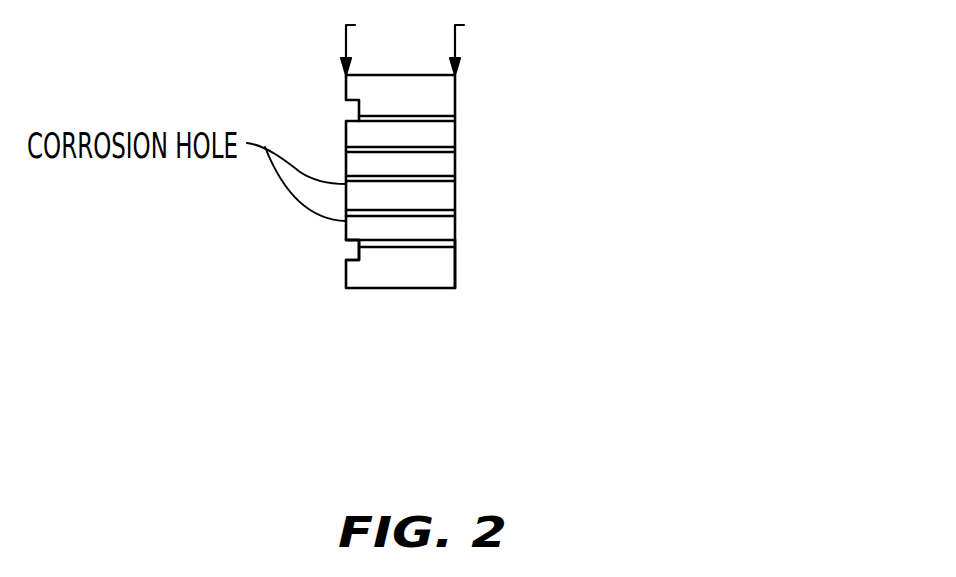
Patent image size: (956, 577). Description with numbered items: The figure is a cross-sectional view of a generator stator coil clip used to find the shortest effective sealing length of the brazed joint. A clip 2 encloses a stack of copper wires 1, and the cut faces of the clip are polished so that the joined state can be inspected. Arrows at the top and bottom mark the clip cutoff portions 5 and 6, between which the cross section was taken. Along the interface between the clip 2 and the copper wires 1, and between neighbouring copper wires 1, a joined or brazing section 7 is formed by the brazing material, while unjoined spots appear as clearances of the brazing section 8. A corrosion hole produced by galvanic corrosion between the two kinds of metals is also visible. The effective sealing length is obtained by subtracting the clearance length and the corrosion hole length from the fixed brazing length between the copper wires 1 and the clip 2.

The copper wires 1 is at (446, 168).
The clip 2 is at (346, 100).
The clip cutoff portion 5 is at (346, 290).
The clip cutoff portion 6 is at (455, 290).
The joined or brazing section 7 is at (443, 215).
The clearances of the brazing section 8 is at (450, 186).